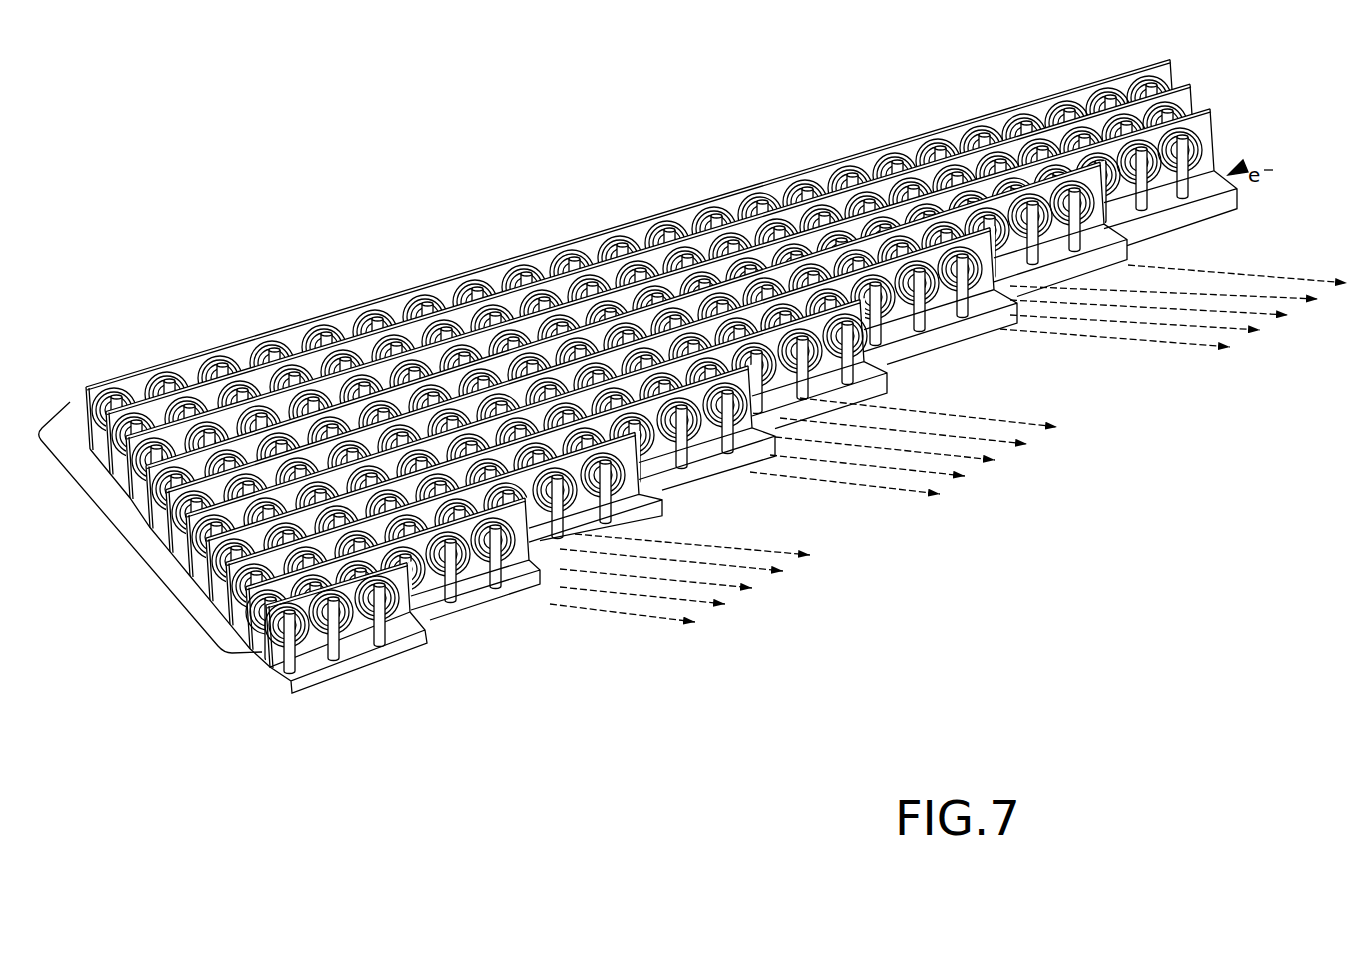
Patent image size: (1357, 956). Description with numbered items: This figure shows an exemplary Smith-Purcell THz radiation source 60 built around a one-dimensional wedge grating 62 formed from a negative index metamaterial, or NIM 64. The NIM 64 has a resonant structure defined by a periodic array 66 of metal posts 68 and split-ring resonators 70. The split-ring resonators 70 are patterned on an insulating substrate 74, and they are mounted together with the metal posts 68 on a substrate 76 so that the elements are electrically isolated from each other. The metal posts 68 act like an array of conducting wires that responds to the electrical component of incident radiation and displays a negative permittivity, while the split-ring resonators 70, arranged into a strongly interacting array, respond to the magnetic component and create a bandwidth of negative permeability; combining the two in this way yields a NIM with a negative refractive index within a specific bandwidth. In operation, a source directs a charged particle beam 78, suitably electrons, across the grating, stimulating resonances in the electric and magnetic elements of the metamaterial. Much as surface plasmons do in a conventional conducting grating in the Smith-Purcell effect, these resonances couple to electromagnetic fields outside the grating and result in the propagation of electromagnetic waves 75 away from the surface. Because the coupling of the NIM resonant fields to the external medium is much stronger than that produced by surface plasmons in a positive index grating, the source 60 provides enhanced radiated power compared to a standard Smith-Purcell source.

The Smith-Purcell THz radiation source 60 is at (183, 268).
The one-dimensional wedge grating 62 is at (438, 629).
The NIM 64 is at (628, 332).
The periodic array 66 is at (128, 560).
The metal posts 68 is at (345, 645).
The split-ring resonators 70 is at (262, 655).
The insulating substrate 74 is at (256, 630).
The electromagnetic waves 75 is at (1195, 348).
The substrate 76 is at (413, 641).
The charged particle beam 78 is at (1230, 166).